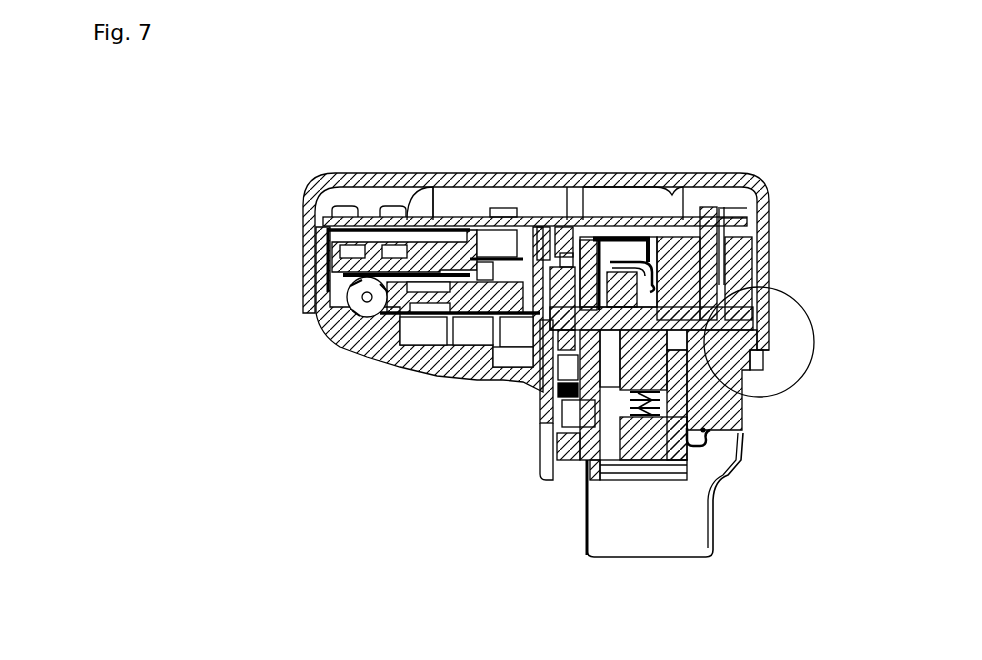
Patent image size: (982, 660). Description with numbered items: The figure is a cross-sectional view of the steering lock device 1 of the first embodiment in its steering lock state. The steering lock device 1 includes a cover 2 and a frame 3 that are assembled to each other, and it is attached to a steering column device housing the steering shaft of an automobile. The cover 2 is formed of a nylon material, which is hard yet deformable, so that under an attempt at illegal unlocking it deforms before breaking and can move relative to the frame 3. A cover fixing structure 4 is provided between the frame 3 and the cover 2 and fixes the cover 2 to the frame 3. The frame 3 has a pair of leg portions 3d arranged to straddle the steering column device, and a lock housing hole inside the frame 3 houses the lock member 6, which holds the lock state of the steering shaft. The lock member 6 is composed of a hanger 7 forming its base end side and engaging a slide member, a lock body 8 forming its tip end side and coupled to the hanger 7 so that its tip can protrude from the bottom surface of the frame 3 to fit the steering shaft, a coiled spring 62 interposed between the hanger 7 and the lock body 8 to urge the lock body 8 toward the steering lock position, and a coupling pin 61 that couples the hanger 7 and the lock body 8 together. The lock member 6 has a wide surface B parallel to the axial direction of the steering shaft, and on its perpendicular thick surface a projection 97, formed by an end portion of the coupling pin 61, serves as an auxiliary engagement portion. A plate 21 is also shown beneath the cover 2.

The steering lock device 1 is at (688, 158).
The cover 2 is at (778, 211).
The frame 3 is at (423, 374).
The leg portion 3d is at (595, 527).
The cover fixing structure 4 is at (781, 374).
The lock member 6 is at (663, 490).
The hanger 7 is at (675, 273).
The lock body 8 is at (667, 445).
The plate 21 is at (558, 210).
The coupling pin 61 is at (556, 366).
The coiled spring 62 is at (683, 406).
The projection 97 is at (540, 388).
The wide surface B is at (625, 438).